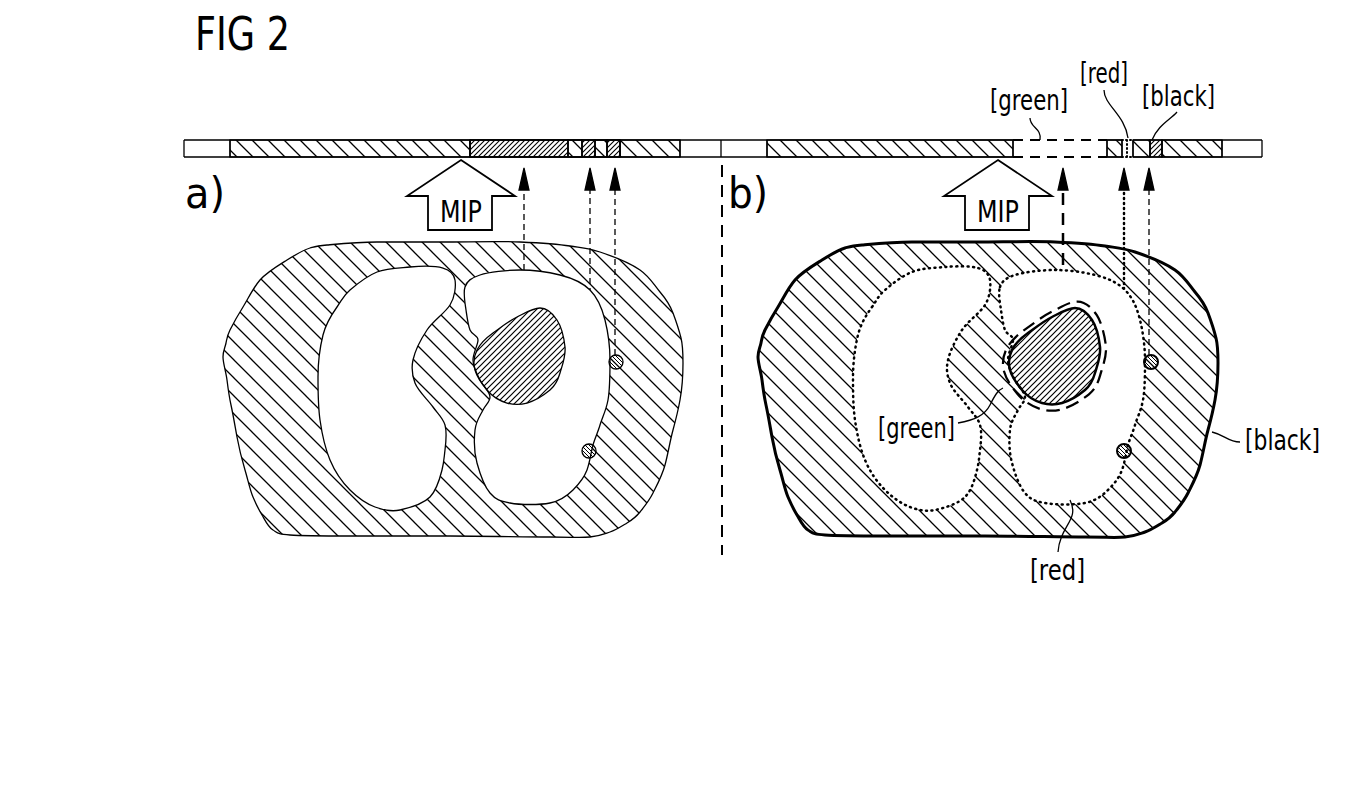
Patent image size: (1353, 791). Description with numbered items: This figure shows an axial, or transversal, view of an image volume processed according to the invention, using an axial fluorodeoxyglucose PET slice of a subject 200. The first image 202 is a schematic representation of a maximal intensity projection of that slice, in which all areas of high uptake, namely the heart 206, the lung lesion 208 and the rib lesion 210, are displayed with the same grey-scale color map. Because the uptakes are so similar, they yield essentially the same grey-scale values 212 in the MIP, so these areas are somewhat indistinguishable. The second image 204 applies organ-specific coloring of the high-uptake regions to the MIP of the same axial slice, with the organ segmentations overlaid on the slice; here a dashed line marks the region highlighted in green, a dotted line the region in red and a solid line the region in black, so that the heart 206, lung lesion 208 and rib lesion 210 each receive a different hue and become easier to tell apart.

The subject 200 is at (270, 560).
The first image 202 is at (456, 85).
The second image 204 is at (941, 88).
The heart 206 is at (522, 404).
The lung lesion 208 is at (596, 456).
The rib lesion 210 is at (621, 356).
The grey-scale values 212 is at (620, 123).